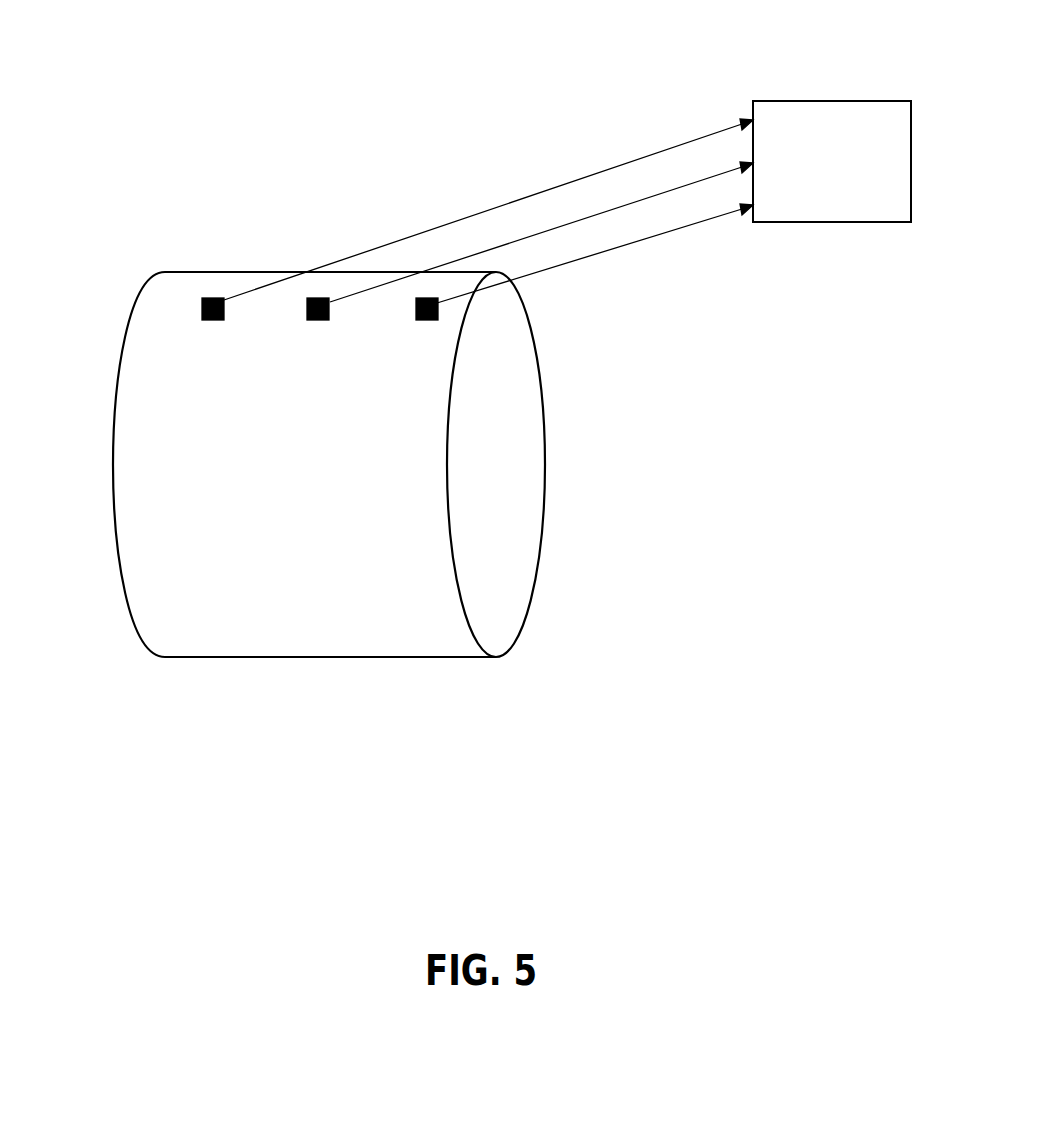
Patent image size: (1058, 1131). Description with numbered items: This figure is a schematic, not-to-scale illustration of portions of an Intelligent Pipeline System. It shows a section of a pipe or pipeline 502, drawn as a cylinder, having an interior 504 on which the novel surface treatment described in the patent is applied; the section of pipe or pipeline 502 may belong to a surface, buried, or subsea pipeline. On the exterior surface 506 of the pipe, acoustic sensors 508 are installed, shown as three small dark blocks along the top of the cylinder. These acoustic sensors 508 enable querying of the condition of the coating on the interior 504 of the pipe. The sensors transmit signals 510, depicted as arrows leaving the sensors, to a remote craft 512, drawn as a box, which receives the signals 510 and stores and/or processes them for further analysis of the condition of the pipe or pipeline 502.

The pipe or pipeline section 502 is at (356, 397).
The interior 504 is at (507, 472).
The exterior surface 506 is at (150, 556).
The acoustic sensors 508 is at (213, 321).
The signals 510 is at (653, 233).
The remote craft 512 is at (888, 223).